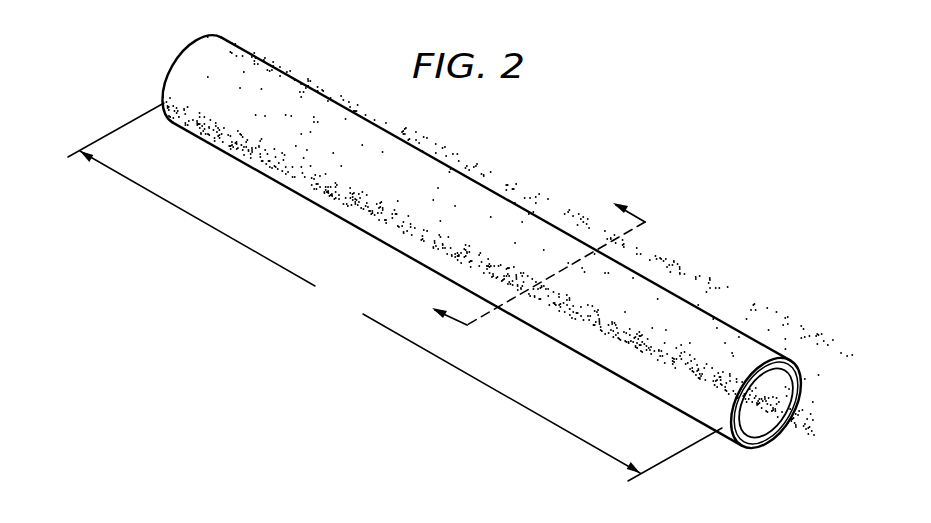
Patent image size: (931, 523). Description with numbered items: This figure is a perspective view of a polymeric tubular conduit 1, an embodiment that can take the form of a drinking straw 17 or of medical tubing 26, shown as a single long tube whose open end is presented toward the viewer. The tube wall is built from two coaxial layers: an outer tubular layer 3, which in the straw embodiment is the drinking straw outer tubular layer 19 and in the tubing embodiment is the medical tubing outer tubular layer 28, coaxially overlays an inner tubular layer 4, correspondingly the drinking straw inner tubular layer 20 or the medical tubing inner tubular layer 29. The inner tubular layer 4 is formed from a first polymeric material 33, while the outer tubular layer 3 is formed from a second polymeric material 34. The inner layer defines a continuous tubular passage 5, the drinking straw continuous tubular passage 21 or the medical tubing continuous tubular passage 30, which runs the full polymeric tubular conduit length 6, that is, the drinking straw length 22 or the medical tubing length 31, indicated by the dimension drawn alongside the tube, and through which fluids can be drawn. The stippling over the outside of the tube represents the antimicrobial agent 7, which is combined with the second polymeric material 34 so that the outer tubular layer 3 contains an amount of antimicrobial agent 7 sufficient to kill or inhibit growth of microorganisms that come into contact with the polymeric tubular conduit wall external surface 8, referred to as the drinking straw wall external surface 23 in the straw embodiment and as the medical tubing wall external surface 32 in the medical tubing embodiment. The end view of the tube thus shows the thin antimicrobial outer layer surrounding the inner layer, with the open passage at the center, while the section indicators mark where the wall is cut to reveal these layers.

The polymeric tubular conduit 1 is at (536, 273).
The drinking straw 17 is at (536, 273).
The medical tubing 26 is at (461, 153).
The antimicrobial agent 7 is at (507, 240).
The polymeric tubular conduit wall external surface 8 is at (507, 240).
The drinking straw wall external surface 23 is at (507, 240).
The medical tubing wall external surface 32 is at (678, 325).
The outer tubular layer 3 is at (805, 382).
The drinking straw outer tubular layer 19 is at (805, 382).
The second polymeric material 34 is at (805, 382).
The medical tubing outer tubular layer 28 is at (798, 373).
The inner tubular layer 4 is at (815, 403).
The drinking straw inner tubular layer 20 is at (815, 403).
The medical tubing inner tubular layer 29 is at (815, 403).
The first polymeric material 33 is at (795, 388).
The continuous tubular passage 5 is at (796, 435).
The drinking straw continuous tubular passage 21 is at (796, 435).
The medical tubing continuous tubular passage 30 is at (755, 417).
The polymeric tubular conduit length 6 is at (395, 292).
The drinking straw length 22 is at (395, 292).
The medical tubing length 31 is at (395, 292).